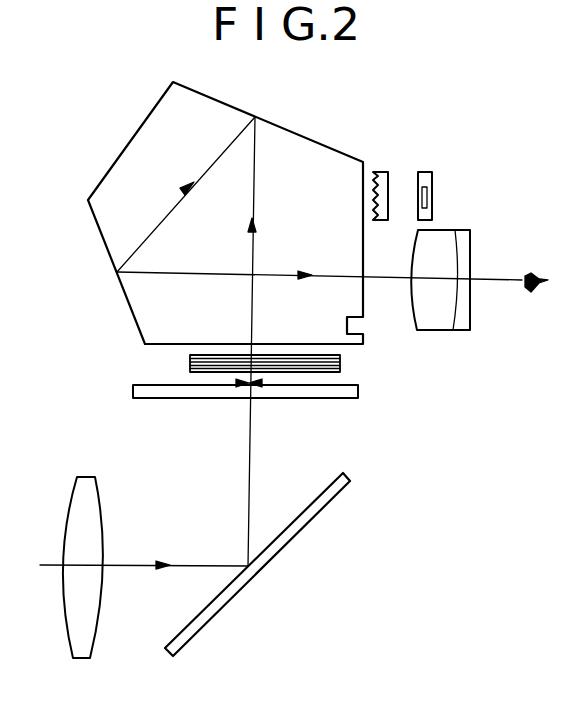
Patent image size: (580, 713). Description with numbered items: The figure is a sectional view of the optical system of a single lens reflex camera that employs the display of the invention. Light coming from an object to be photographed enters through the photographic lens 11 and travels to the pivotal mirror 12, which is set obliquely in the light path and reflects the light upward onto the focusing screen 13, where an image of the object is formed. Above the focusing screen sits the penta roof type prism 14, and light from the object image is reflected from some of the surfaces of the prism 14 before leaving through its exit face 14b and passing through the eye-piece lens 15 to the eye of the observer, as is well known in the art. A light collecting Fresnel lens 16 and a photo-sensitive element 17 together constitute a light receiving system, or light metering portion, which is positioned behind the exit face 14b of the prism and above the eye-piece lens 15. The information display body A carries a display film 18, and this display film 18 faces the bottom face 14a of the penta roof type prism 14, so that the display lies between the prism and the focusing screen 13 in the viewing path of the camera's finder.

The photographic lens 11 is at (83, 476).
The pivotal mirror 12 is at (317, 503).
The focusing screen 13 is at (315, 399).
The penta roof type prism 14 is at (224, 110).
The bottom face 14a is at (158, 347).
The exit face 14b is at (364, 168).
The eye-piece lens 15 is at (445, 229).
The light collecting Fresnel lens 16 is at (390, 178).
The photo-sensitive element 17 is at (431, 172).
The display film 18 is at (327, 355).
The information display body A is at (343, 367).